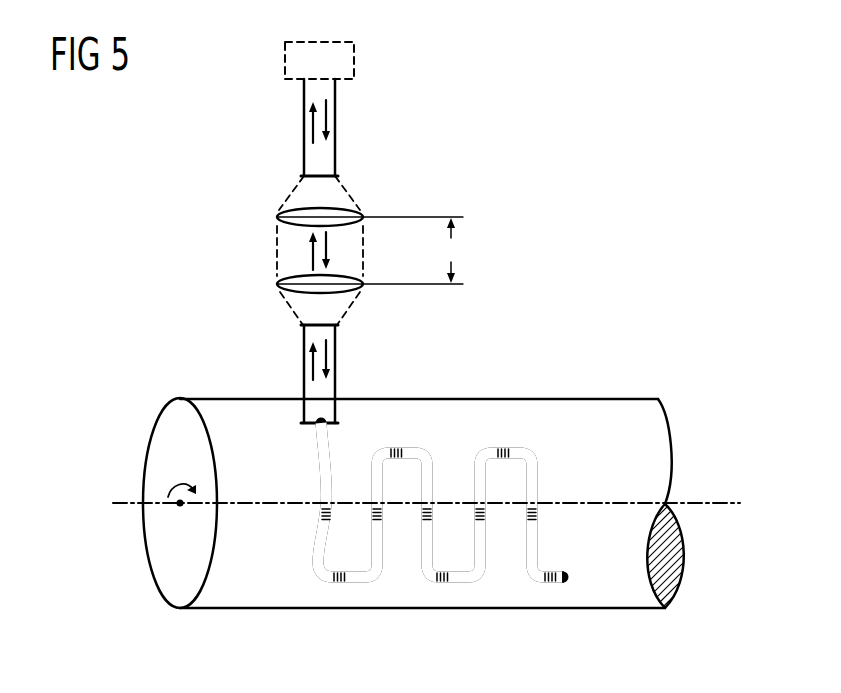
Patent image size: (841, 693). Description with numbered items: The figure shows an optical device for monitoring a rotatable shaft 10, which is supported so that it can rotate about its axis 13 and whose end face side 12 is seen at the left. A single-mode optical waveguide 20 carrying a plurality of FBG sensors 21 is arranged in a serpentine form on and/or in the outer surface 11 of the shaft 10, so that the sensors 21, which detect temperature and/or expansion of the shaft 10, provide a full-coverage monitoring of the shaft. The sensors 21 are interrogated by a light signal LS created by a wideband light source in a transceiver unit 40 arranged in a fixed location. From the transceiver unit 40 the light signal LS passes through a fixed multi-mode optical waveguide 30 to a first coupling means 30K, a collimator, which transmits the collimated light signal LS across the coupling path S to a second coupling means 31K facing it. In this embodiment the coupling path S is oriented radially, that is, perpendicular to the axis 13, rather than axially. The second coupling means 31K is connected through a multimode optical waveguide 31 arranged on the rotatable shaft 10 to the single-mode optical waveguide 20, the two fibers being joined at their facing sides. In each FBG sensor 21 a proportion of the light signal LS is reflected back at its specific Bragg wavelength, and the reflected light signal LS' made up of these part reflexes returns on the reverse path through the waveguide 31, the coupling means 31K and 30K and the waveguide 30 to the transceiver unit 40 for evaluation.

The shaft 10 is at (228, 608).
The outer surface 11 is at (585, 398).
The end face side 12 is at (163, 558).
The axis 13 is at (712, 503).
The single-mode optical waveguide 20 is at (312, 542).
The FBG sensors 21 is at (395, 446).
The multi-mode optical waveguide 30 is at (311, 161).
The first coupling means 30K is at (332, 217).
The multimode optical waveguide 31 is at (311, 409).
The second coupling means 31K is at (291, 290).
The transceiver unit 40 is at (352, 58).
The light signal LS is at (366, 234).
The reflected light signal LS' is at (270, 240).
The coupling path S is at (413, 250).